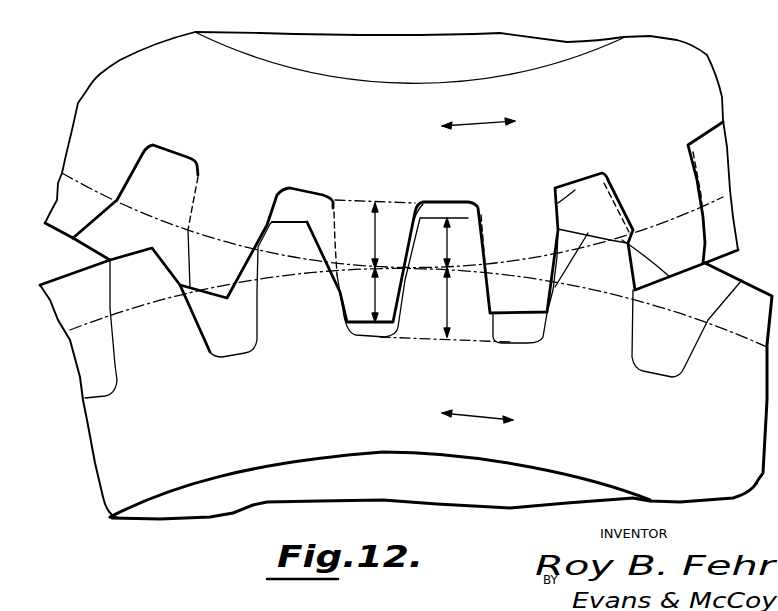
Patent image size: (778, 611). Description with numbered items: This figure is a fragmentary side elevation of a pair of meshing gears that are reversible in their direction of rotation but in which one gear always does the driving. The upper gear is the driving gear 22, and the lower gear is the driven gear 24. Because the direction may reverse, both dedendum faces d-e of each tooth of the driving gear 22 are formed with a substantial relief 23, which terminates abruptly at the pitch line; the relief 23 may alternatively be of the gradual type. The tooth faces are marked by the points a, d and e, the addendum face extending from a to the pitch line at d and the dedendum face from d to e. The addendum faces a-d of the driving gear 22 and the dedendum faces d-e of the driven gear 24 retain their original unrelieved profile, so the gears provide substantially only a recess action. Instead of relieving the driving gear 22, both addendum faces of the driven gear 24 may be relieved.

The driving gear 22 is at (389, 192).
The relief 23 is at (145, 172).
The driven gear 24 is at (406, 368).
The addendum face point a is at (419, 270).
The pitch line point d is at (419, 270).
The dedendum face point e is at (422, 268).